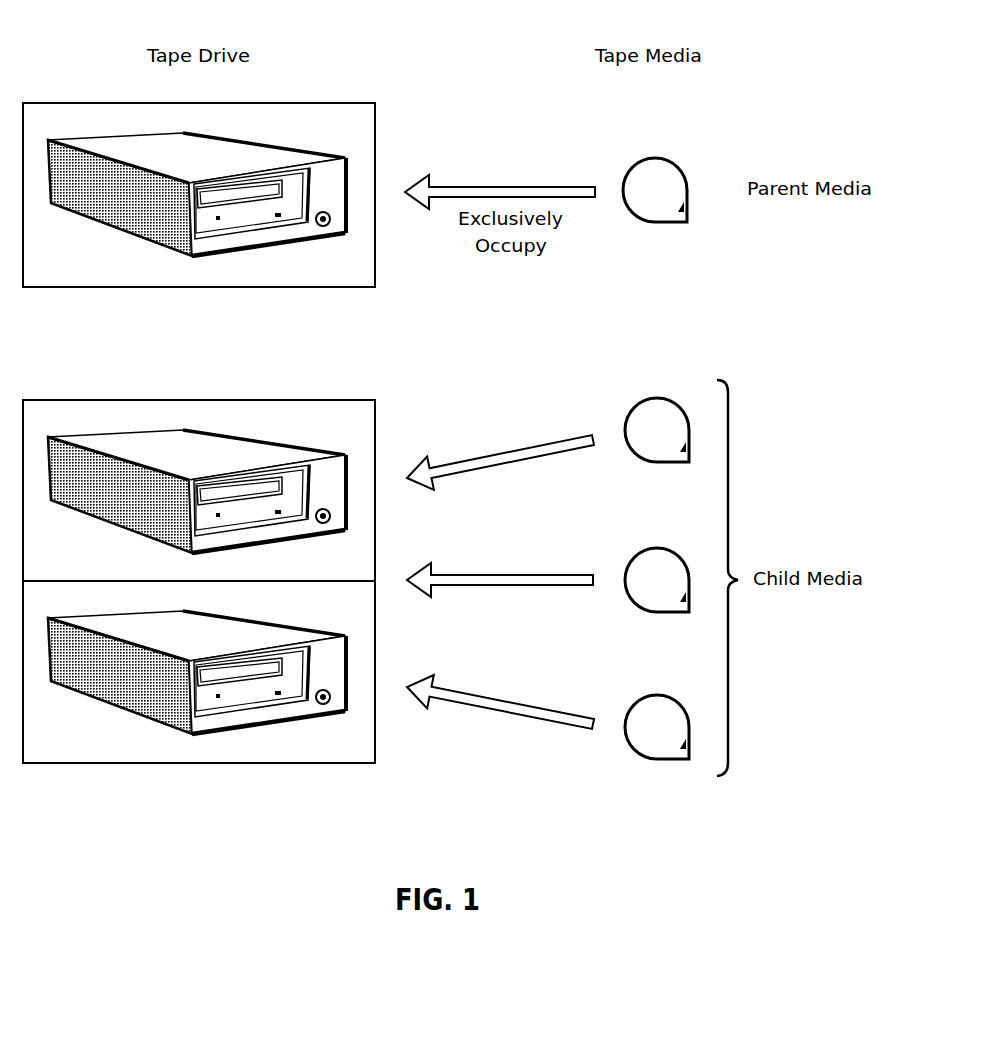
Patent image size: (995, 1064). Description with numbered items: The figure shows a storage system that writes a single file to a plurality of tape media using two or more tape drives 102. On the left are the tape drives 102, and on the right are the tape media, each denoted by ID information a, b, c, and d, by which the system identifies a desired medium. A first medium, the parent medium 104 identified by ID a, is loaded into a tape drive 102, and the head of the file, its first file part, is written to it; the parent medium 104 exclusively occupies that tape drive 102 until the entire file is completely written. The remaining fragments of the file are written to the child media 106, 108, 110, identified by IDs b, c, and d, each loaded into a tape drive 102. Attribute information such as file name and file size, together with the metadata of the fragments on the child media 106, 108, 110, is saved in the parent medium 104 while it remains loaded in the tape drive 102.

The tape drive 102 is at (308, 103).
The parent medium 104 is at (672, 162).
The child medium 106 is at (662, 397).
The child medium 108 is at (654, 548).
The child medium 110 is at (653, 695).